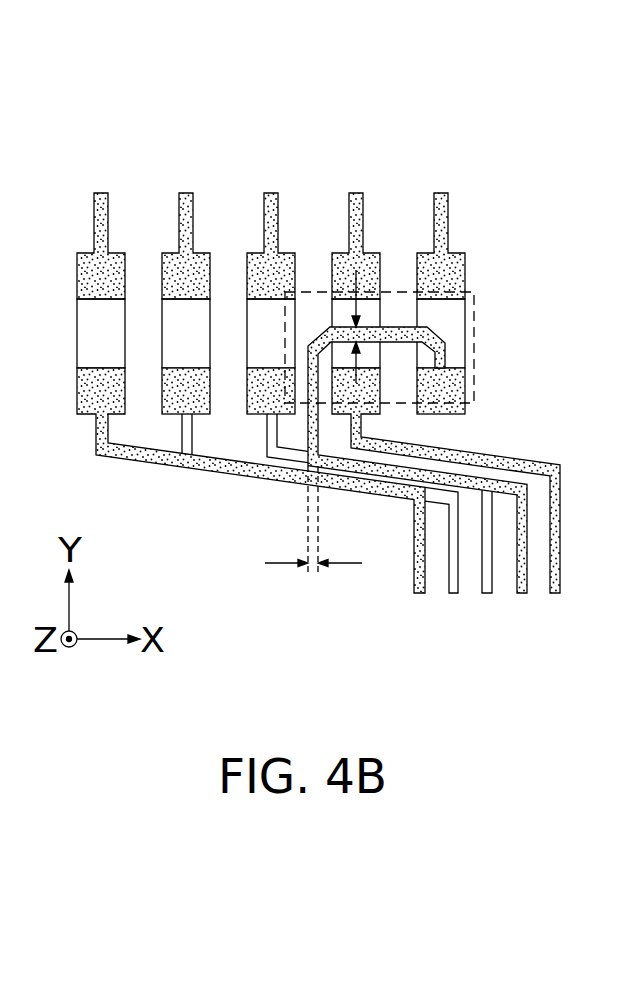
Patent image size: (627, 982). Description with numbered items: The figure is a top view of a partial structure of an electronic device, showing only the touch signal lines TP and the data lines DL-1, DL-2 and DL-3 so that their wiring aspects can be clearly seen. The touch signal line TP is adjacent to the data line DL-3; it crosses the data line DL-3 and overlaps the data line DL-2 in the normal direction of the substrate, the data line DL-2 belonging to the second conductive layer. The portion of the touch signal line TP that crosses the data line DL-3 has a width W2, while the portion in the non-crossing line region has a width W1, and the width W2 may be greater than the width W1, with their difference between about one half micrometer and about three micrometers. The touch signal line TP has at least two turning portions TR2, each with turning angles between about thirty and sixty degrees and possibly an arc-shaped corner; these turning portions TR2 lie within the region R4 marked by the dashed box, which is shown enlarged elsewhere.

The touch signal line TP is at (98, 203).
The data line DL-1 is at (186, 203).
The data line DL-2 is at (268, 203).
The data line DL-3 is at (356, 203).
The turning portion TR2 is at (312, 334).
The width W2 is at (358, 283).
The width W1 is at (313, 537).
The region R4 is at (474, 346).